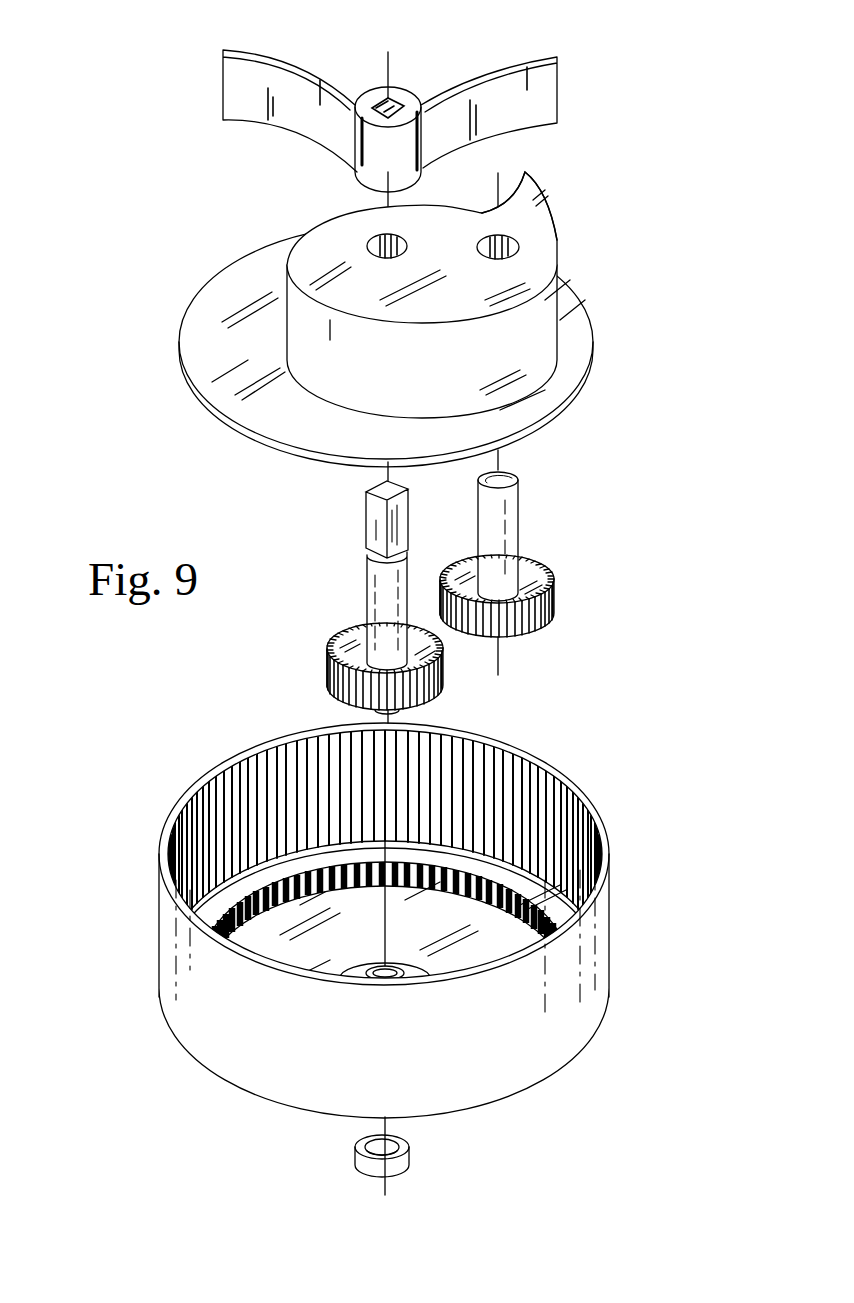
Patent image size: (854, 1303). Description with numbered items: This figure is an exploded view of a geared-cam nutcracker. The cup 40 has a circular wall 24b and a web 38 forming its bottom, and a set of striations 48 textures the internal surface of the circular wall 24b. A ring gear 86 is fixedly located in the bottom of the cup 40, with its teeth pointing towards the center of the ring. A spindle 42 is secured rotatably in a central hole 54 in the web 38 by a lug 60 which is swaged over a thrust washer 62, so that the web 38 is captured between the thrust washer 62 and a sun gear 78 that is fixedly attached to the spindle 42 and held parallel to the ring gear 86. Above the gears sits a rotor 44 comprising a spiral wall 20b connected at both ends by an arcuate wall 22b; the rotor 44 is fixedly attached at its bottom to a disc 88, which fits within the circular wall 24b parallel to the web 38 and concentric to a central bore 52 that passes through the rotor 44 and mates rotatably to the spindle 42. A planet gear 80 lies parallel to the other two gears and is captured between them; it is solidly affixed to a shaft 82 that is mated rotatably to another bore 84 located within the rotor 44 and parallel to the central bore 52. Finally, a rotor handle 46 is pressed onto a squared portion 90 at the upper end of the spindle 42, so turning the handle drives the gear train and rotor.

The rotor handle 46 is at (510, 57).
The central bore 52 is at (372, 234).
The rotor 44 is at (420, 278).
The arcuate wall 22b is at (482, 213).
The bore 84 is at (520, 246).
The spiral wall 20b is at (407, 351).
The disc 88 is at (242, 380).
The squared portion 90 is at (365, 493).
The shaft 82 is at (498, 532).
The spindle 42 is at (343, 575).
The sun gear 78 is at (328, 641).
The planet gear 80 is at (557, 587).
The lug 60 is at (403, 715).
The striations 48 is at (263, 807).
The web 38 is at (452, 873).
The circular wall 24b is at (391, 920).
The ring gear 86 is at (550, 918).
The cup 40 is at (548, 1030).
The central hole 54 is at (330, 980).
The thrust washer 62 is at (410, 1153).